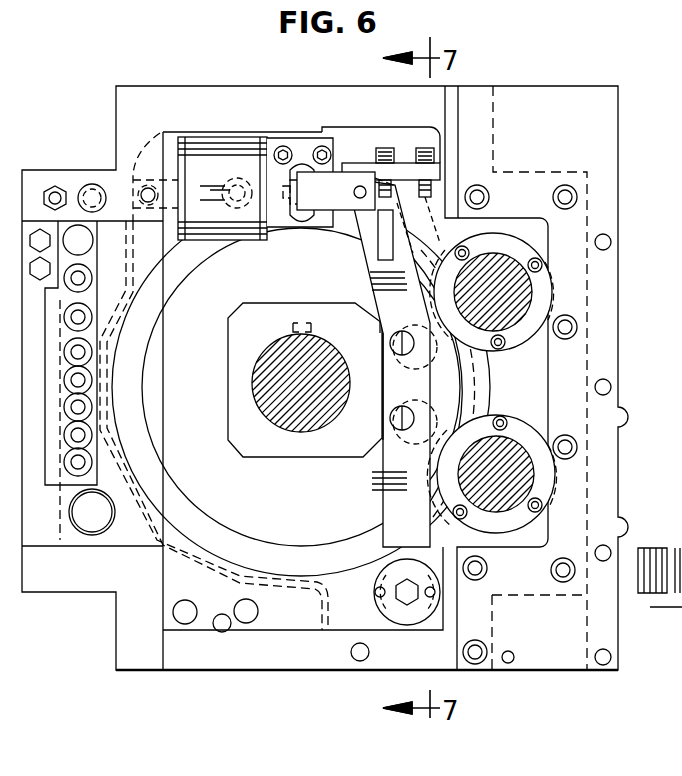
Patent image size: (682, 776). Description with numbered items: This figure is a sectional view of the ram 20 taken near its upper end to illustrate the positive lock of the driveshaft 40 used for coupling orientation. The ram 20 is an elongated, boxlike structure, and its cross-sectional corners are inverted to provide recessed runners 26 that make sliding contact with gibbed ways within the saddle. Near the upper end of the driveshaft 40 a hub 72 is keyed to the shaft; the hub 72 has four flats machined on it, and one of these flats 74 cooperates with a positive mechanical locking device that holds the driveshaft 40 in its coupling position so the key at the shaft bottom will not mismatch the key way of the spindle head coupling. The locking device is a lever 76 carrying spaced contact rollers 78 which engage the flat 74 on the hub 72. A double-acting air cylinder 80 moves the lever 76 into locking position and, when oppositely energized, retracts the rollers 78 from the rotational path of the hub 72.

The ram 20 is at (240, 660).
The recessed runners 26 is at (70, 170).
The driveshaft 40 is at (263, 392).
The hub 72 is at (240, 342).
The flat 74 is at (372, 395).
The lever 76 is at (397, 497).
The contact rollers 78 is at (397, 287).
The double-acting air cylinder 80 is at (246, 243).